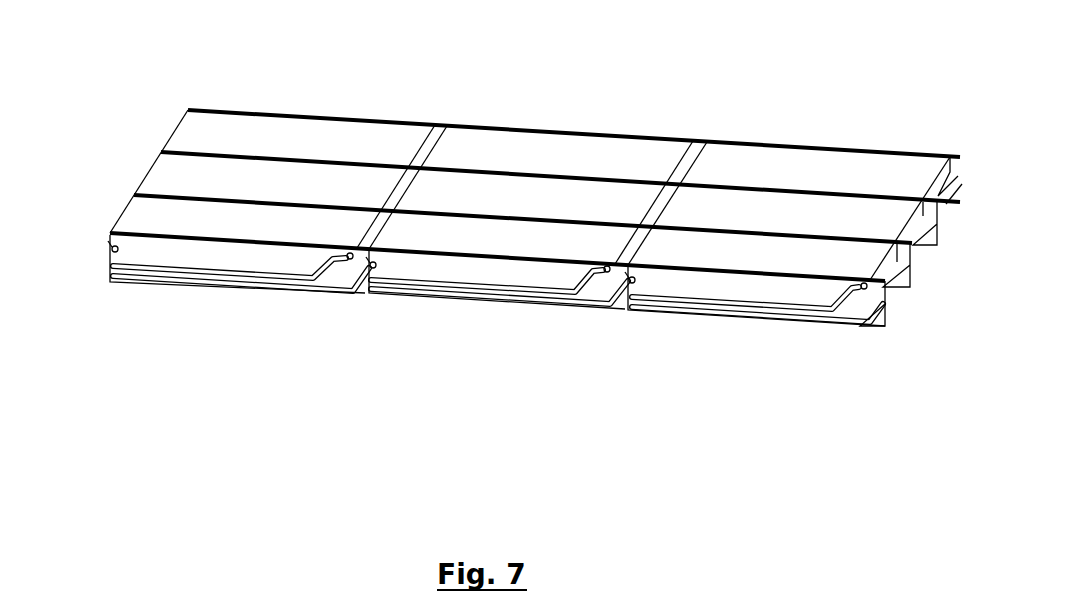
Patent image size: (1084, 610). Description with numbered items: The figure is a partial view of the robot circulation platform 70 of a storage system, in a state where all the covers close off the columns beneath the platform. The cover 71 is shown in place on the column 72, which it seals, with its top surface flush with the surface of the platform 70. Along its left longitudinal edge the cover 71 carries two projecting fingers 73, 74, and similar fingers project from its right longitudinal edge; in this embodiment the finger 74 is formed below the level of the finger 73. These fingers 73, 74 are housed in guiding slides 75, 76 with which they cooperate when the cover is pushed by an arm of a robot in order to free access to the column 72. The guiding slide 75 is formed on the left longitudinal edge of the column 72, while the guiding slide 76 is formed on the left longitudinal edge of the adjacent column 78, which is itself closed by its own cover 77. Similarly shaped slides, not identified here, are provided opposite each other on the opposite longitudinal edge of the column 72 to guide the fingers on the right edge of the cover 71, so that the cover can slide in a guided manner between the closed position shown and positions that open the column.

The platform 70 is at (645, 120).
The cover 71 is at (520, 237).
The column 72 is at (507, 277).
The finger 73 is at (623, 310).
The finger 74 is at (373, 268).
The guiding slide 75 is at (555, 293).
The guiding slide 76 is at (298, 287).
The cover 77 is at (290, 225).
The column 78 is at (230, 257).